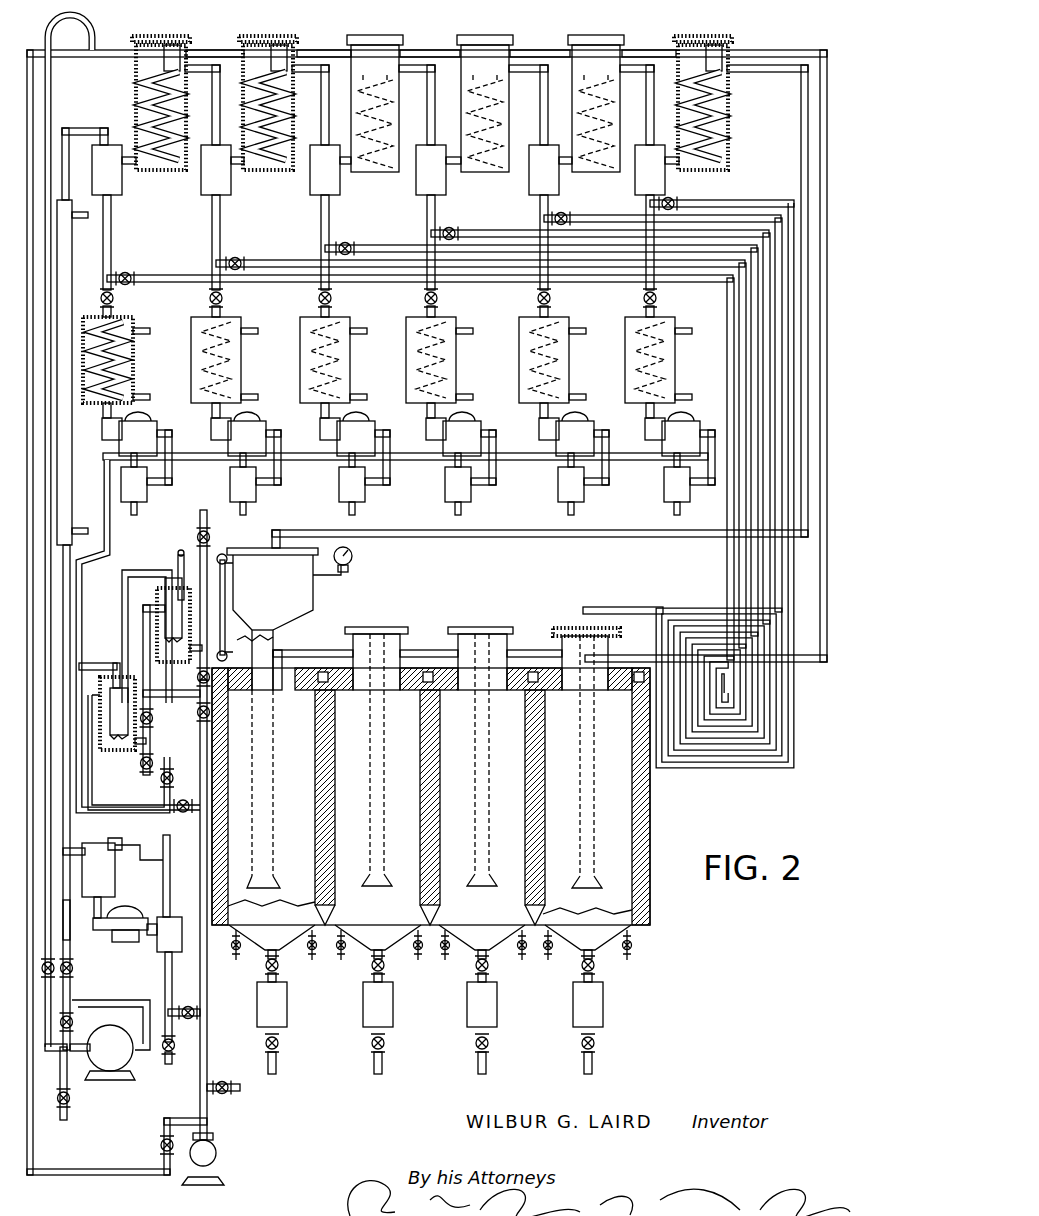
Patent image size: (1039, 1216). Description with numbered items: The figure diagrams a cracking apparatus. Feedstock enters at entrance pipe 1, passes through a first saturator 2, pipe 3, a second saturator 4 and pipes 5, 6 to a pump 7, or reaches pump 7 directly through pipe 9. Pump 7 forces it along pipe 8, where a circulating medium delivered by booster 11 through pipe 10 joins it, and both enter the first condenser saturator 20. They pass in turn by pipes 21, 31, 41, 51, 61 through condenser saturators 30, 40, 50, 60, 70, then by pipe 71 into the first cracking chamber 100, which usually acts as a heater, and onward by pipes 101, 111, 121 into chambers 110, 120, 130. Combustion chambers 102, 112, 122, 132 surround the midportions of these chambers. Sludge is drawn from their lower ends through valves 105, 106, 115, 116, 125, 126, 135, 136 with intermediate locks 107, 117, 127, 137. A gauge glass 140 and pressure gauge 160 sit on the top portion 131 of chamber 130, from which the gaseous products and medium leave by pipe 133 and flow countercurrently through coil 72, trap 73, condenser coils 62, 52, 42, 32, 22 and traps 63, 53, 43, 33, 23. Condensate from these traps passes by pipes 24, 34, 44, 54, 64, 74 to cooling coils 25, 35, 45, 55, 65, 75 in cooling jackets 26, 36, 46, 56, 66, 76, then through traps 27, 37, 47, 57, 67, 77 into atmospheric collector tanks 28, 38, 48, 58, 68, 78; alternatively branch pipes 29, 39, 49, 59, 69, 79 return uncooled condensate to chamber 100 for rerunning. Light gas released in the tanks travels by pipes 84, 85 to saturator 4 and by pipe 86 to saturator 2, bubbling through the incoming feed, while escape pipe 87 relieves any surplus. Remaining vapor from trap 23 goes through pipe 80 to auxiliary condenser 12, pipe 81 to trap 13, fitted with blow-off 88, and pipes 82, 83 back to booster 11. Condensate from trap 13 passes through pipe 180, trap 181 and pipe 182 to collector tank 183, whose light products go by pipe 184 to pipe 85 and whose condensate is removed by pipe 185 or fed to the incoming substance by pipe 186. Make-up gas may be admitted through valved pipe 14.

The entrance pipe 1 is at (204, 510).
The first saturator 2 is at (178, 650).
The pipe 3 is at (150, 612).
The second saturator 4 is at (120, 748).
The pipe 5 is at (92, 782).
The pipe 6 is at (200, 836).
The pump 7 is at (216, 1153).
The pipe 8 is at (118, 58).
The pipe 9 is at (240, 1090).
The pipe 10 is at (48, 92).
The booster 11 is at (112, 1066).
The auxiliary condenser 12 is at (64, 258).
The trap or separator 13 is at (106, 874).
The pipe 14 is at (66, 1120).
The first condenser saturator 20 is at (168, 48).
The pipe 21 is at (200, 56).
The condenser coil 22 is at (178, 104).
The trap or separator 23 is at (112, 178).
The pipe 24 is at (112, 250).
The cooling coil 25 is at (128, 344).
The cooling jacket 26 is at (118, 330).
The trap 27 is at (148, 418).
The collector tank 28 is at (147, 488).
The branch pipe 29 is at (158, 276).
The condenser saturator 30 is at (276, 48).
The pipe 31 is at (310, 56).
The condenser coil 32 is at (288, 104).
The trap 33 is at (222, 178).
The pipe 34 is at (212, 226).
The cooling coil 35 is at (240, 346).
The cooling jacket 36 is at (232, 326).
The trap 37 is at (256, 418).
The collector tank 38 is at (256, 488).
The branch pipe 39 is at (248, 262).
The condenser saturator 40 is at (382, 50).
The pipe 41 is at (416, 56).
The condenser coil 42 is at (392, 104).
The trap 43 is at (330, 178).
The pipe 44 is at (321, 208).
The cooling coil 45 is at (350, 346).
The cooling jacket 46 is at (340, 326).
The trap 47 is at (364, 418).
The collector tank 48 is at (365, 488).
The branch pipe 49 is at (368, 256).
The condenser saturator 50 is at (492, 50).
The pipe 51 is at (526, 56).
The condenser coil 52 is at (502, 104).
The trap 53 is at (436, 178).
The pipe 54 is at (427, 208).
The cooling coil 55 is at (456, 346).
The cooling jacket 56 is at (446, 326).
The trap 57 is at (470, 418).
The collector tank 58 is at (471, 488).
The branch pipe 59 is at (462, 234).
The condenser saturator 60 is at (603, 50).
The pipe 61 is at (636, 56).
The condenser coil 62 is at (612, 104).
The trap 63 is at (548, 178).
The pipe 64 is at (540, 212).
The cooling coil 65 is at (568, 346).
The cooling jacket 66 is at (556, 326).
The trap 67 is at (582, 418).
The collector tank 68 is at (584, 488).
The branch pipe 69 is at (570, 220).
The last condenser saturator 70 is at (712, 48).
The pipe 71 is at (760, 54).
The coil 72 is at (726, 102).
The trap or separator 73 is at (655, 178).
The pipe 74 is at (646, 208).
The cooling coil 75 is at (672, 346).
The cooling jacket 76 is at (664, 326).
The trap 77 is at (684, 418).
The collector tank 78 is at (690, 490).
The branch pipe 79 is at (730, 210).
The pipe 80 is at (70, 130).
The pipe 81 is at (70, 830).
The pipe 82 is at (72, 920).
The pipe 83 is at (122, 1002).
The pipe 84 is at (490, 462).
The pipe 85 is at (96, 662).
The pipe 86 is at (145, 572).
The escape pipe 87 is at (180, 552).
The blow-off 88 is at (138, 848).
The first cracking chamber 100 is at (578, 640).
The pipe 101 is at (528, 650).
The combustion chamber 102 is at (622, 862).
The valve 105 is at (596, 968).
The valve 106 is at (596, 1046).
The lock 107 is at (600, 1010).
The cracking chamber 110 is at (486, 640).
The pipe 111 is at (418, 650).
The combustion chamber 112 is at (512, 905).
The valve 115 is at (490, 968).
The valve 116 is at (490, 1046).
The lock 117 is at (495, 1010).
The cracking chamber 120 is at (380, 640).
The pipe 121 is at (325, 648).
The combustion chamber 122 is at (392, 910).
The valve 125 is at (386, 968).
The valve 126 is at (386, 1046).
The lock 127 is at (390, 1010).
The final cracking chamber 130 is at (285, 642).
The upper portion 131 is at (300, 582).
The combustion chamber 132 is at (275, 915).
The pipe 133 is at (802, 134).
The valve 135 is at (280, 968).
The valve 136 is at (280, 1046).
The lock 137 is at (285, 1010).
The gauge glass 140 is at (208, 556).
The pressure gauge 160 is at (353, 556).
The pipe 180 is at (102, 908).
The trap 181 is at (125, 938).
The pipe 182 is at (152, 922).
The collector tank 183 is at (172, 918).
The pipe 184 is at (165, 856).
The pipe 185 is at (166, 968).
The pipe 186 is at (180, 1008).